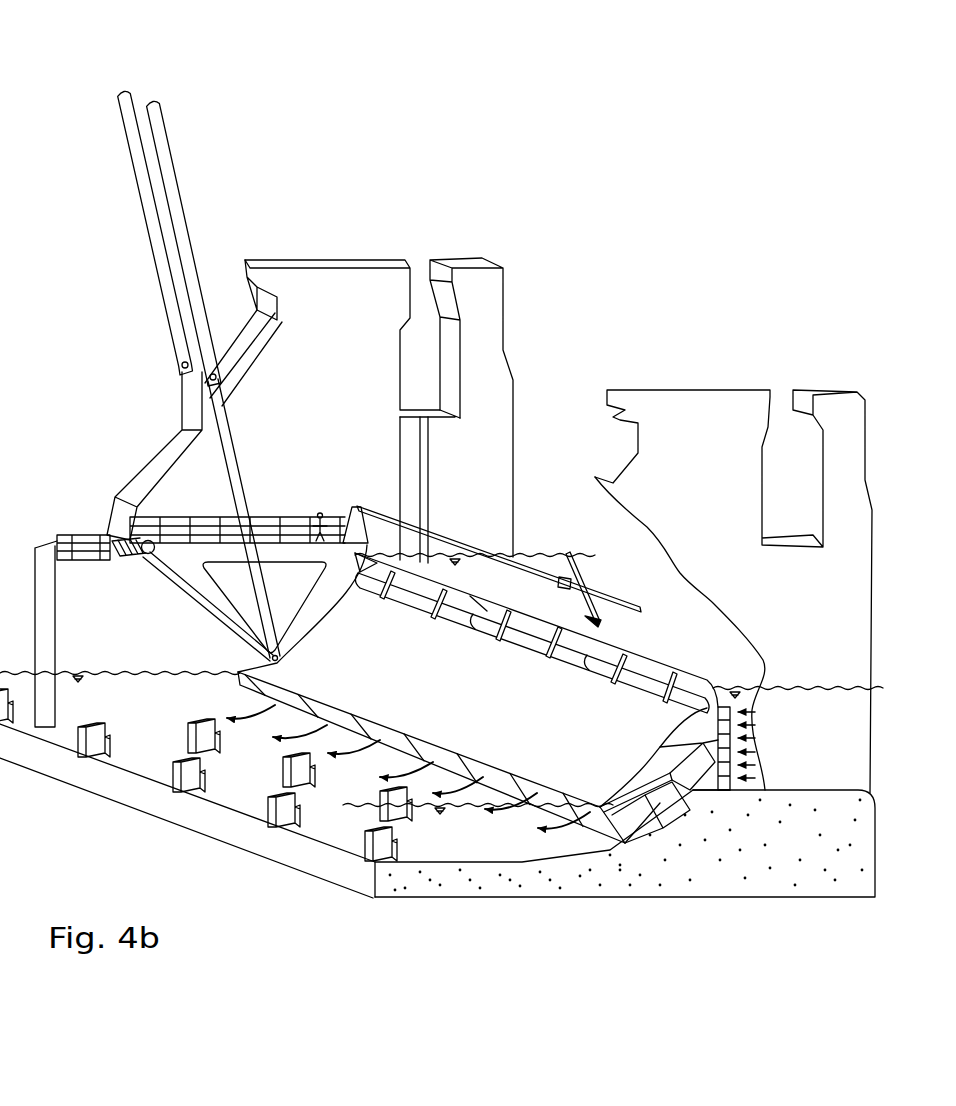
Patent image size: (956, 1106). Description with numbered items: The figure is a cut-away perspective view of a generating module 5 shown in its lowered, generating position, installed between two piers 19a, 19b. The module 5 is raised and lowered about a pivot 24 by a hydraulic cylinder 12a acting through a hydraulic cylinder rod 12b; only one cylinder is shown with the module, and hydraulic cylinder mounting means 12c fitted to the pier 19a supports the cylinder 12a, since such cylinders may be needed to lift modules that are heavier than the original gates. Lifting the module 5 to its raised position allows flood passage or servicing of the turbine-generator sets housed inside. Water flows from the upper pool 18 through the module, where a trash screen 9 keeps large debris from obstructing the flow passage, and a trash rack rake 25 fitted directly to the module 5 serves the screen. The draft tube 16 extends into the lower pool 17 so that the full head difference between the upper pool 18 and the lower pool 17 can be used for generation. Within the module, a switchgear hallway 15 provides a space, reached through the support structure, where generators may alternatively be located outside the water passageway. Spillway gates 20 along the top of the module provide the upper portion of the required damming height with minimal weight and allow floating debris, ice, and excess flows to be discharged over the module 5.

The generating module 5 is at (498, 709).
The trash screen 9 is at (737, 748).
The hydraulic cylinders 12a is at (180, 191).
The hydraulic cylinder rods 12b is at (240, 463).
The hydraulic cylinder mounting means 12c is at (183, 401).
The switchgear hallway 15 is at (684, 798).
The draft tube 16 is at (631, 819).
The lower pool 17 is at (152, 671).
The upper pool 18 is at (543, 554).
The pier 19a is at (352, 334).
The pier 19b is at (715, 461).
The spillway gates 20 is at (518, 638).
The pivot 24 is at (146, 561).
The trash rack rake 25 is at (590, 579).